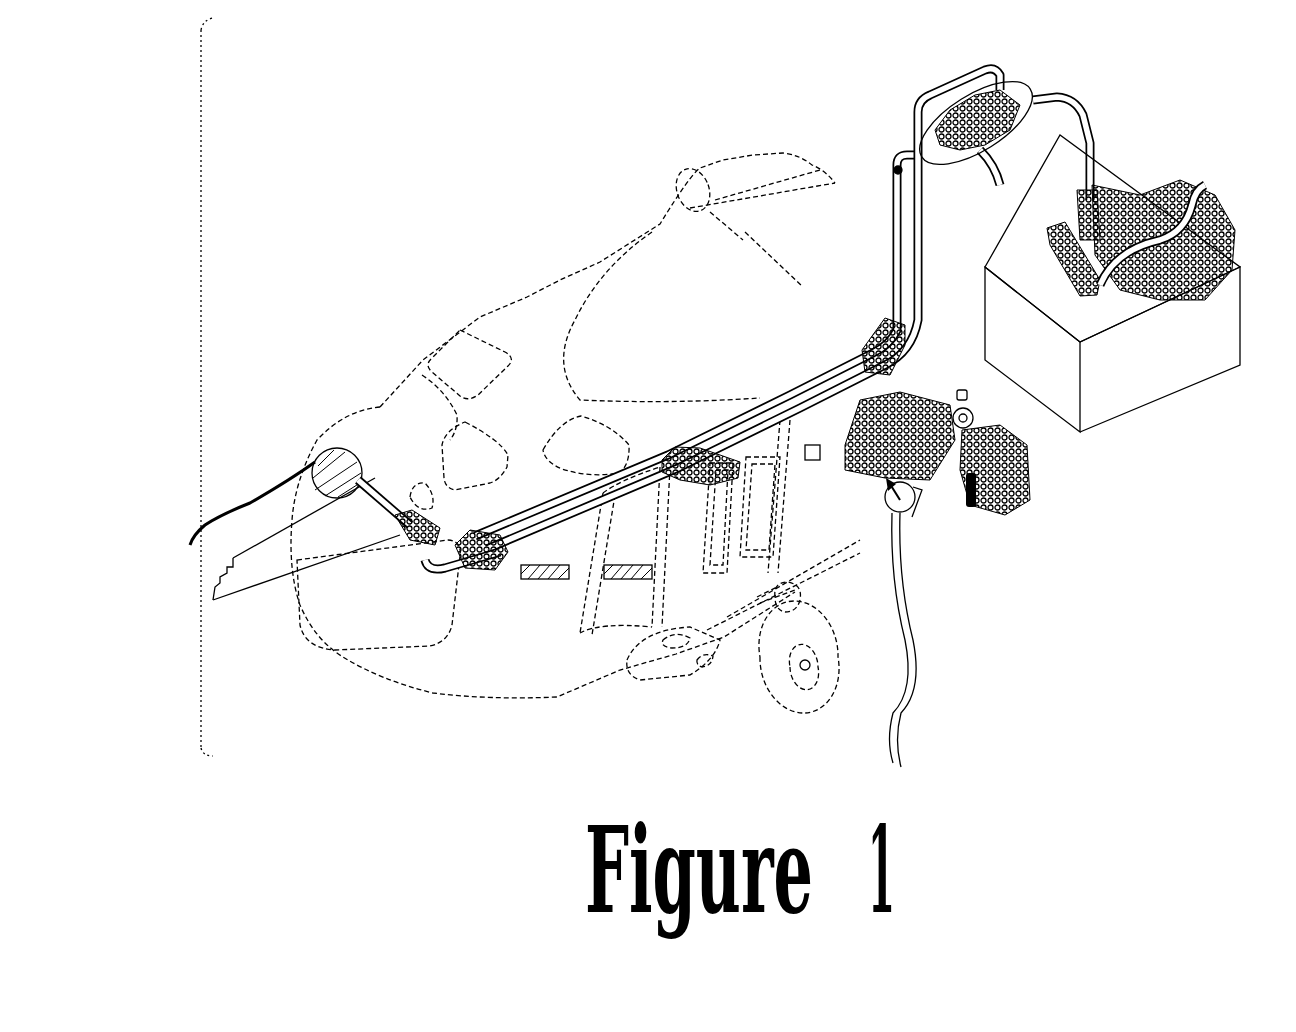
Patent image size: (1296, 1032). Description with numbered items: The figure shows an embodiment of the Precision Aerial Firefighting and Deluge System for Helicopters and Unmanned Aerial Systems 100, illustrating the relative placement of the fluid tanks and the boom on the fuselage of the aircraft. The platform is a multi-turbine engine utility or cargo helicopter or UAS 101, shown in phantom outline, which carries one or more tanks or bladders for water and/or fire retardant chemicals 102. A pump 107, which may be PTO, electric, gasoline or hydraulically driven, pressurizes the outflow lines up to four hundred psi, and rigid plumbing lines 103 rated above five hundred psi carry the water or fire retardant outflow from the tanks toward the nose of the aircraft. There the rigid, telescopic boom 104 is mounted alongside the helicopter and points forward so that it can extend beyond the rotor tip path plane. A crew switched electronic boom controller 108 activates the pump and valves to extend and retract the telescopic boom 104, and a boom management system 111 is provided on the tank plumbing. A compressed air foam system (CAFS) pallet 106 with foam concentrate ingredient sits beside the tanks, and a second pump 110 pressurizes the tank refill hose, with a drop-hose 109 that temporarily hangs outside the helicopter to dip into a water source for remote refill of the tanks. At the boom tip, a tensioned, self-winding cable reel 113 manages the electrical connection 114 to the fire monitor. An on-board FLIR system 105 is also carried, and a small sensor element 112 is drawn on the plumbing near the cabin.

The Precision Aerial Firefighting and Deluge System for Helicopters and Unmanned Aer 100 is at (200, 370).
The multi-turbine engine utility or cargo helicopter or UAS 101 is at (533, 310).
The tanks or bladders for water and/or fire retardant chemicals 102 is at (1183, 372).
The rigid plumbing lines 103 is at (932, 345).
The rigid telescopic boom 104 is at (268, 562).
The on-board FLIR system 105 is at (622, 579).
The compressed air foam system (CAFS) pallet 106 is at (1010, 477).
The pump 107 is at (920, 410).
The crew switched electronic boom controller 108 is at (545, 580).
The drop-hose 109 is at (907, 633).
The second pump to pressurize tank refill hose 110 is at (887, 513).
The boom management system 111 is at (977, 80).
The sensor 112 is at (812, 446).
The tensioned, self-winding cable reel 113 is at (338, 452).
The electrical connection 114 is at (258, 497).